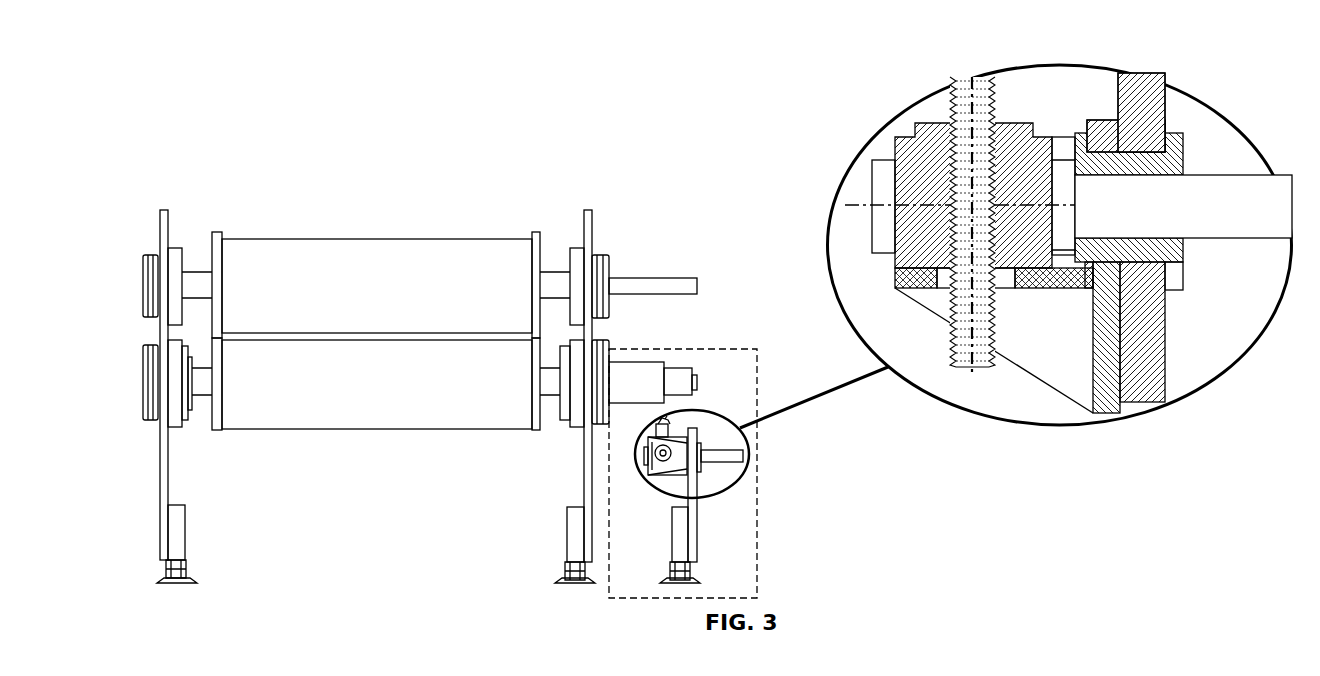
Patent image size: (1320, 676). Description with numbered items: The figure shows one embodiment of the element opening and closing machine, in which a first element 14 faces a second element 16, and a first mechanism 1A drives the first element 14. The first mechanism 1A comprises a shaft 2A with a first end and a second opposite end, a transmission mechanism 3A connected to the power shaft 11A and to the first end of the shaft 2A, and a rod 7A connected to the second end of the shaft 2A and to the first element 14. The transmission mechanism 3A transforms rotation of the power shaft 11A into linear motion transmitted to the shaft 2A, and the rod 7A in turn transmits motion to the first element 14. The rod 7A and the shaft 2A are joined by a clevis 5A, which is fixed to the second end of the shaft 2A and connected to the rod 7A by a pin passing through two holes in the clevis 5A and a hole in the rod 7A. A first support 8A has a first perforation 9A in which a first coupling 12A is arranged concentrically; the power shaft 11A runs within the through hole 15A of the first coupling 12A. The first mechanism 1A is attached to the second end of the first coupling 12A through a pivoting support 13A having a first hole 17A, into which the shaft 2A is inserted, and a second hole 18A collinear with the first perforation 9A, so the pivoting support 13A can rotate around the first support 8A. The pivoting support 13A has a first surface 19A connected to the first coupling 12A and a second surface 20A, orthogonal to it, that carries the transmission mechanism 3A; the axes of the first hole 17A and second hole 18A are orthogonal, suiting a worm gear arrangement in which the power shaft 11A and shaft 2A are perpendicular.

The first mechanism 1A is at (773, 563).
The shaft 2A is at (652, 470).
The transmission mechanism 3A is at (880, 190).
The clevis 5A is at (650, 435).
The rod 7A is at (653, 363).
The first support 8A is at (697, 515).
The first perforation 9A is at (1180, 262).
The power shaft 11A is at (723, 462).
The first coupling 12A is at (1112, 122).
The pivoting support 13A is at (683, 418).
The first element 14 is at (293, 403).
The through hole 15A is at (1158, 158).
The second element 16 is at (433, 252).
The first hole 17A is at (1167, 290).
The second hole 18A is at (895, 192).
The first surface 19A is at (1093, 367).
The second surface 20A is at (905, 290).